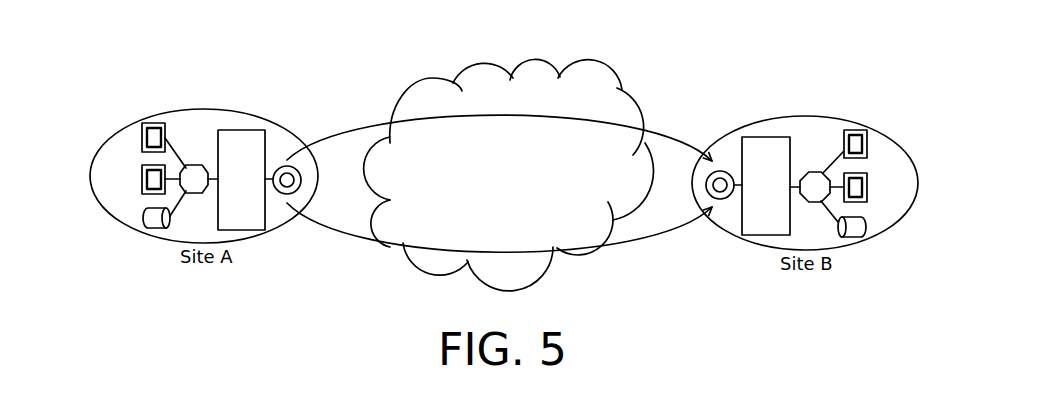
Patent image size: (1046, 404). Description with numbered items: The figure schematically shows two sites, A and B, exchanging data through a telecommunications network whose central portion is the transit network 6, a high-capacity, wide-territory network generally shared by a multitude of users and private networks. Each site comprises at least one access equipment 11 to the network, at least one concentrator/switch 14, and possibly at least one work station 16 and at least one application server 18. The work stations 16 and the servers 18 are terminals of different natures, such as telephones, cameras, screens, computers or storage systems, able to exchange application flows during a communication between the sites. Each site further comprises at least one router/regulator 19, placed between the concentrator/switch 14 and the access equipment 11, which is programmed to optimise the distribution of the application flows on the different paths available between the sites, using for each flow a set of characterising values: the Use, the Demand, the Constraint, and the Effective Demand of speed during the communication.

The transit network 6 is at (595, 78).
The access equipment 11 is at (298, 175).
The concentrator/switch 14 is at (196, 170).
The work station 16 is at (142, 177).
The application server 18 is at (150, 223).
The router/regulator 19 is at (237, 138).